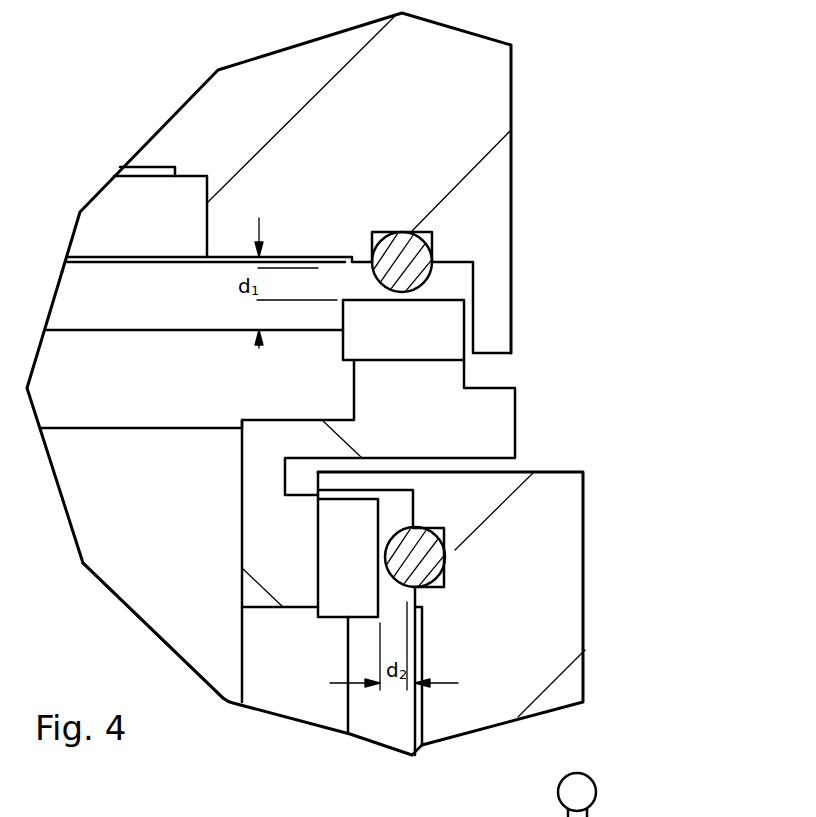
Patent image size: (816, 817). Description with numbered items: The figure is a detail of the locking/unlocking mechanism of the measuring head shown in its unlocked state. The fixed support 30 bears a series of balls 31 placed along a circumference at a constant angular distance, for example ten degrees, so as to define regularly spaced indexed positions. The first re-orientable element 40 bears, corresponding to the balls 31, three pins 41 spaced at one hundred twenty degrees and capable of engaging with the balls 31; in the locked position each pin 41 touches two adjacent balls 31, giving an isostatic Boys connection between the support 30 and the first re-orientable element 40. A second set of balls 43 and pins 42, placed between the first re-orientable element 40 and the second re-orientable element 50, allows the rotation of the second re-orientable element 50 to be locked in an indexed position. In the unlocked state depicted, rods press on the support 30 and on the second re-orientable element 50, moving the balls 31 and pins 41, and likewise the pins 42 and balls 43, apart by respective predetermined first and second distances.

The support 30 is at (464, 102).
The balls 31 is at (410, 256).
The pins 41 is at (403, 330).
The first re-orientable element 40 is at (477, 430).
The second set of balls 43 is at (425, 555).
The second re-orientable element 50 is at (515, 633).
The pins 42 is at (343, 593).